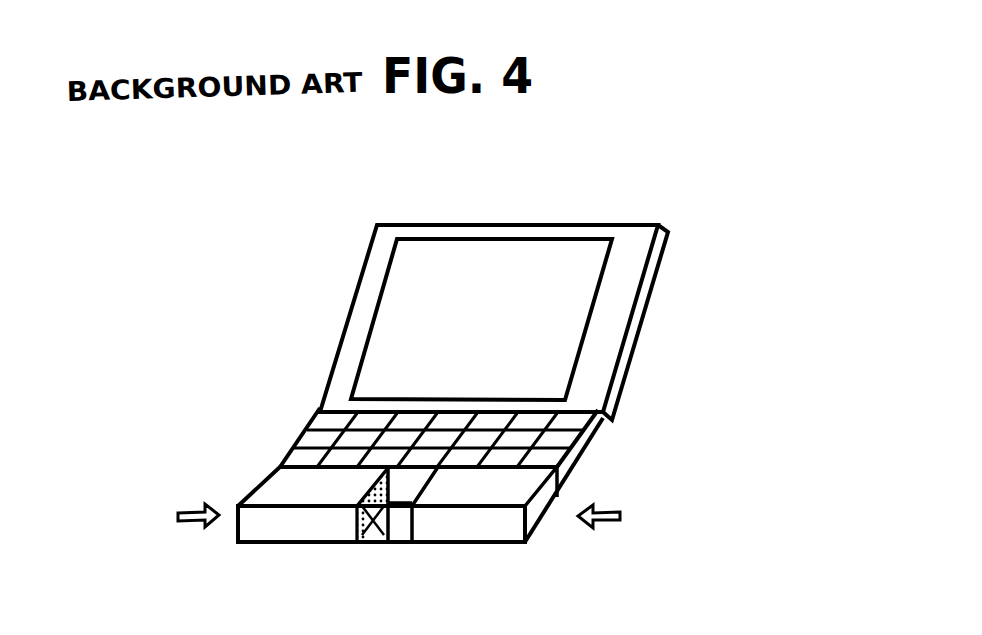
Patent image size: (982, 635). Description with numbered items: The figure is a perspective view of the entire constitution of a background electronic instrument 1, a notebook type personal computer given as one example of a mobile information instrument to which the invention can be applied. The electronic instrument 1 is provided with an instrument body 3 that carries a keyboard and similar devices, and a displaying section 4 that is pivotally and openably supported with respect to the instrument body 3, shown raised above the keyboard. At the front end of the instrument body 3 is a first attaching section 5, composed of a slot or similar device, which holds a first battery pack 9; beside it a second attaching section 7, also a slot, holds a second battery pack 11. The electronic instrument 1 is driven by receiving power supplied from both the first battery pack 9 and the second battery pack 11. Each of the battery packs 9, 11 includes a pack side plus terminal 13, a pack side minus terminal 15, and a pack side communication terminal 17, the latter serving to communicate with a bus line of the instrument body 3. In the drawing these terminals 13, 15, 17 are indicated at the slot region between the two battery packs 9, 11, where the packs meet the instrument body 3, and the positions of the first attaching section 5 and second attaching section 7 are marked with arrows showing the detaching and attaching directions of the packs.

The electronic instrument 1 is at (538, 203).
The instrument body 3 is at (600, 433).
The displaying section 4 is at (397, 332).
The first attaching section 5 is at (257, 485).
The second attaching section 7 is at (571, 466).
The first battery pack 9 is at (288, 485).
The second battery pack 11 is at (533, 475).
The pack side plus terminal 13 is at (393, 512).
The pack side minus terminal 15 is at (359, 530).
The pack side communication terminal 17 is at (373, 516).